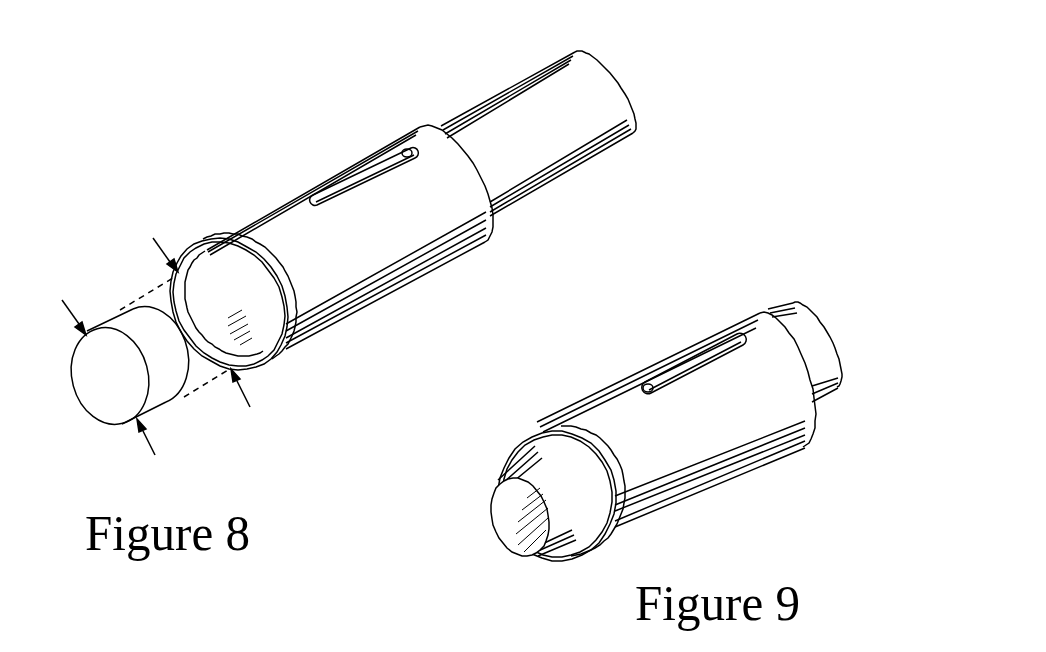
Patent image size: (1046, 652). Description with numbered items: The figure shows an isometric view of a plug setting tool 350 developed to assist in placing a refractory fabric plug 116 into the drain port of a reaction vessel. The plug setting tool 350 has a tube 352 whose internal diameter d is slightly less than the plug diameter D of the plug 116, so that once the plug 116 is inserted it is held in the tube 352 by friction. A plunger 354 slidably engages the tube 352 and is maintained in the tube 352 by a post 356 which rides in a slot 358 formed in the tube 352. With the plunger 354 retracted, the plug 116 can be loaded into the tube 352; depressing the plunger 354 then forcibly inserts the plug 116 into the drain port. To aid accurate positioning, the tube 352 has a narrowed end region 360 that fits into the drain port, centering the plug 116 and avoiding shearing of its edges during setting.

In FIG. 8, the plug setting tool 350 is at (247, 127).
In FIG. 9, the plug setting tool 350 is at (580, 387).
In FIG. 8, the tube 352 is at (272, 217).
In FIG. 9, the tube 352 is at (623, 378).
In FIG. 8, the plunger 354 is at (490, 116).
In FIG. 9, the plunger 354 is at (495, 497).
In FIG. 8, the post 356 is at (406, 150).
In FIG. 9, the post 356 is at (651, 383).
In FIG. 8, the slot 358 is at (355, 172).
In FIG. 9, the slot 358 is at (719, 345).
In FIG. 8, the end region 360 is at (205, 255).
In FIG. 9, the end region 360 is at (531, 445).
In FIG. 8, the plug 116 is at (117, 327).